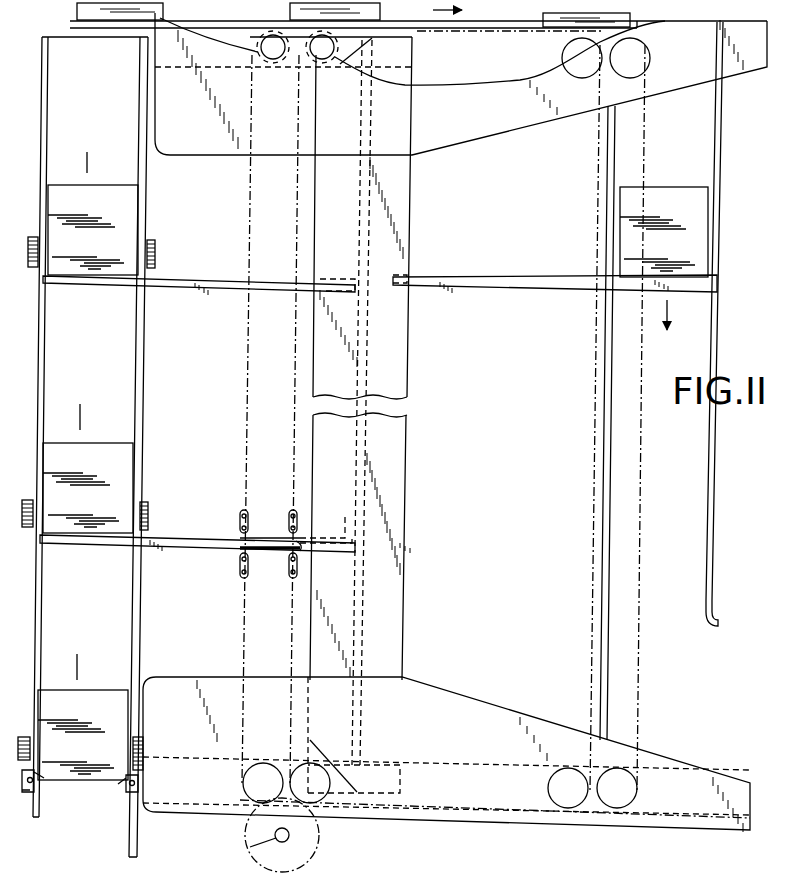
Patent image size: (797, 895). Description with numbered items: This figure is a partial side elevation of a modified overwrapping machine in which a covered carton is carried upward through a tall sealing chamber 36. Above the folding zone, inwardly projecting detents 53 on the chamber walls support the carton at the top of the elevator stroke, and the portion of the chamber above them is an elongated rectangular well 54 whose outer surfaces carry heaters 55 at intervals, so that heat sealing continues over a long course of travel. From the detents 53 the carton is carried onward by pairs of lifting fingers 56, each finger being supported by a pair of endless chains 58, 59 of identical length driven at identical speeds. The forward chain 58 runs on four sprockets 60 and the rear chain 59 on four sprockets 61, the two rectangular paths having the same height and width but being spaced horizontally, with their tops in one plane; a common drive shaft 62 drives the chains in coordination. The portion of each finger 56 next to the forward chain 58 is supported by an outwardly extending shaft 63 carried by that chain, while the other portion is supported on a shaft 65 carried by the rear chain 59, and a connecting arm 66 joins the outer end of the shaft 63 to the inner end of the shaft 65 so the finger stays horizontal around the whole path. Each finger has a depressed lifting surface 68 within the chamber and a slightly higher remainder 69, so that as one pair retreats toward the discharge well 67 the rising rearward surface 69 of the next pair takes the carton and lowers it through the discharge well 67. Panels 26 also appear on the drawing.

The tray panel 26 is at (76, 10).
The sealing chamber 36 is at (42, 78).
The detents 53 is at (42, 790).
The rectangular well 54 is at (52, 106).
The heaters 55 is at (30, 250).
The lifting fingers 56 is at (141, 30).
The endless chain 58 is at (240, 522).
The endless chain 59 is at (290, 522).
The sprockets 60 is at (290, 64).
The sprockets 61 is at (330, 64).
The common drive shaft 62 is at (250, 848).
The shaft 63 is at (238, 548).
The shaft 65 is at (302, 546).
The connecting arm 66 is at (276, 552).
The discharge well 67 is at (726, 182).
The depressed lifting surface 68 is at (112, 277).
The rearward surface portion 69 is at (556, 278).